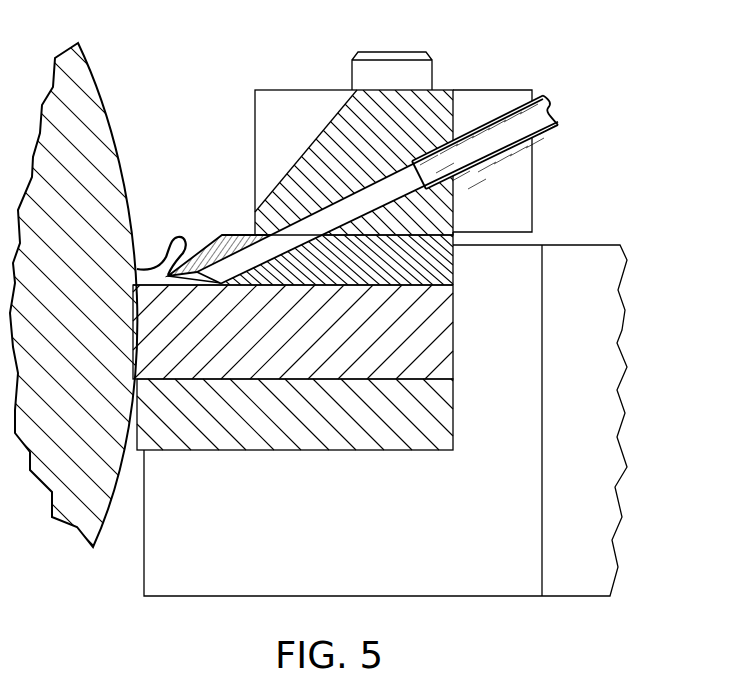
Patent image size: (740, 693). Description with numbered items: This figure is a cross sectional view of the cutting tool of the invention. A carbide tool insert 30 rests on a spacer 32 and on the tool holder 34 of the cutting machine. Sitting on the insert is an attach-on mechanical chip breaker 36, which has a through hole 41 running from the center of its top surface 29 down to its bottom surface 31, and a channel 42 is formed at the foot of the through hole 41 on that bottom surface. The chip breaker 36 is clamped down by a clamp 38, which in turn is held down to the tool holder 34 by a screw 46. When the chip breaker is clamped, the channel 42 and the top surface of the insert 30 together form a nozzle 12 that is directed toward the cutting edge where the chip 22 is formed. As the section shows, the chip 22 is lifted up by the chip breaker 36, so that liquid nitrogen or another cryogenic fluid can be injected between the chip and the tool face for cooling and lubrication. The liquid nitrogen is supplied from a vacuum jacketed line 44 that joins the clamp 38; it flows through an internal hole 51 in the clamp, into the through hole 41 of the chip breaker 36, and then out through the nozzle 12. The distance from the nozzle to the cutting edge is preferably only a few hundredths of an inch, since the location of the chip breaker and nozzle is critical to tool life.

The nozzle 12 is at (170, 287).
The chip 22 is at (159, 247).
The top surface 29 is at (436, 233).
The carbide tool insert 30 is at (450, 350).
The bottom surface 31 is at (441, 274).
The spacer 32 is at (277, 450).
The tool holder 34 is at (492, 590).
The attach-on mechanical chip breaker 36 is at (449, 258).
The clamp 38 is at (440, 96).
The through hole 41 is at (247, 232).
The channel 42 is at (194, 260).
The vacuum jacketed line 44 is at (570, 122).
The screw 46 is at (392, 50).
The internal hole 51 is at (354, 200).